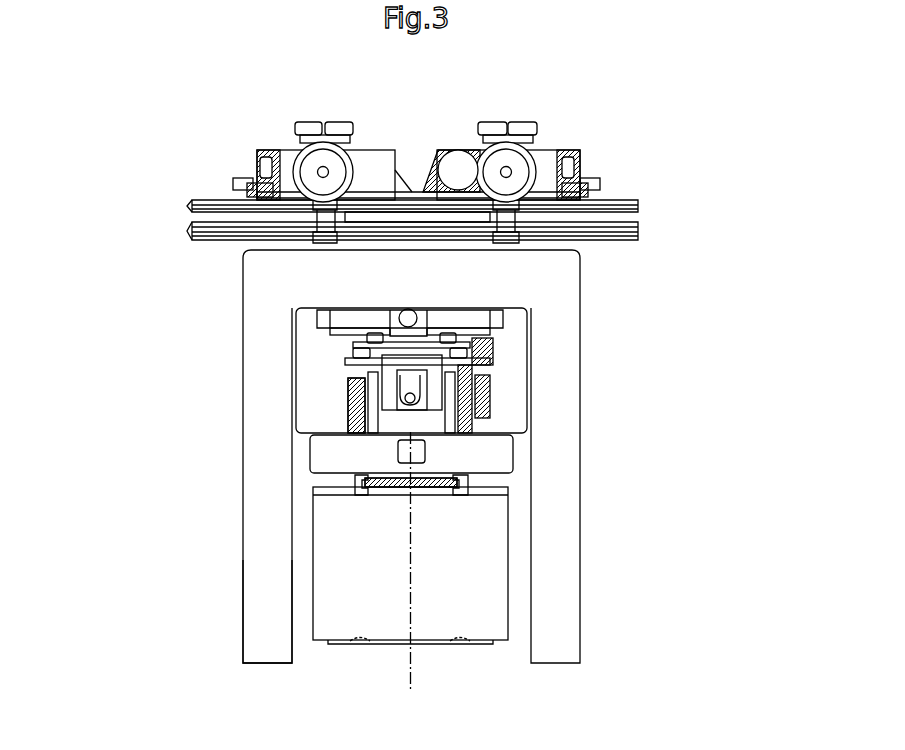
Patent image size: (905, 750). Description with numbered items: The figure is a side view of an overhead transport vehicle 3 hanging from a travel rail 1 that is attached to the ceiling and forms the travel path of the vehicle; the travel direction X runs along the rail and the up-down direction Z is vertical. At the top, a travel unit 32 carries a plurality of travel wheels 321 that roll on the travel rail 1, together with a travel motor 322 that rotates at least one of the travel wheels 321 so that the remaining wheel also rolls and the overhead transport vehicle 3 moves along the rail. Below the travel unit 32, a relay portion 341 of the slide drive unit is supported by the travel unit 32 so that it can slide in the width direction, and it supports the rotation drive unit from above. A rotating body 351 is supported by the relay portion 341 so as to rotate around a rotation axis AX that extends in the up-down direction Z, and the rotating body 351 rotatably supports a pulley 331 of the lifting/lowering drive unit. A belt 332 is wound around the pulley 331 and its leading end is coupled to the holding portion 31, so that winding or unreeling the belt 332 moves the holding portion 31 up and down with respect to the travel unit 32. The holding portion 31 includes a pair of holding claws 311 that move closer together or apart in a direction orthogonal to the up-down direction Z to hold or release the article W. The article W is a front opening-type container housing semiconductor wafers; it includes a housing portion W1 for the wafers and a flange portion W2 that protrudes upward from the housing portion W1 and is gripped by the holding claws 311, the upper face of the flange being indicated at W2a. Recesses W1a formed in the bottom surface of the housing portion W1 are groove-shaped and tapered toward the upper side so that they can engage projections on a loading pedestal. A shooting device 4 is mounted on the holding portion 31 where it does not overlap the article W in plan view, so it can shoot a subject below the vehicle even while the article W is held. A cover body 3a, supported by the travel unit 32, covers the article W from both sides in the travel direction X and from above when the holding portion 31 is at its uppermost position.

The travel rail 1 is at (212, 200).
The overhead transport vehicle 3 is at (118, 275).
The cover body 3a is at (247, 572).
The holding portion 31 is at (522, 443).
The holding claws 311 is at (358, 497).
The travel unit 32 is at (657, 67).
The travel wheels 321 is at (317, 162).
The travel motor 322 is at (458, 158).
The pulley 331 is at (348, 383).
The belt 332 is at (358, 397).
The relay portion 341 is at (345, 363).
The rotating body 351 is at (433, 421).
The shooting device 4 is at (407, 452).
The article W is at (318, 652).
The housing portion W1 is at (495, 570).
The recesses W1a is at (360, 648).
The flange portion W2 is at (423, 483).
The flange top surface W2a is at (386, 476).
The rotation axis AX is at (408, 569).
The travel direction X is at (378, 70).
The up-down direction Z is at (790, 270).